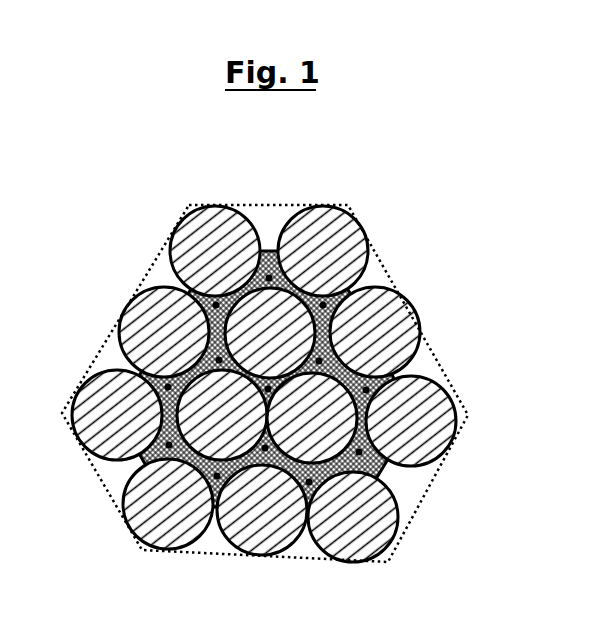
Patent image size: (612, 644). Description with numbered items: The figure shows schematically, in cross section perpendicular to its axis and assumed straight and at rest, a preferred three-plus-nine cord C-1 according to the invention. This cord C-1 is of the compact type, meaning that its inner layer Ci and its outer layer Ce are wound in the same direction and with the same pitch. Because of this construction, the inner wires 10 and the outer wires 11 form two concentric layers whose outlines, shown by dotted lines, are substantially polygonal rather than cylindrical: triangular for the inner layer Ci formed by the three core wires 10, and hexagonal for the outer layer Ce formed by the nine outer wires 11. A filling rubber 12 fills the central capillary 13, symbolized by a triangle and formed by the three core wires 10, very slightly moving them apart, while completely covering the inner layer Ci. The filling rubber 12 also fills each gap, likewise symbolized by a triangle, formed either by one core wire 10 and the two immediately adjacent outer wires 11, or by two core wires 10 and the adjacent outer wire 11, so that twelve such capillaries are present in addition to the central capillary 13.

The inner wires 10 is at (368, 457).
The outer wires 11 is at (117, 417).
The filling rubber 12 is at (330, 292).
The central capillary 13 is at (285, 387).
The outer layer Ce is at (120, 472).
The inner layer Ci is at (277, 467).
The cord C-1 is at (278, 195).